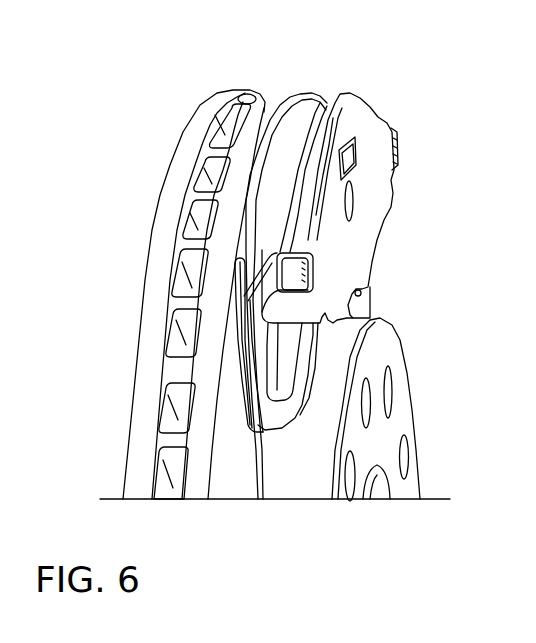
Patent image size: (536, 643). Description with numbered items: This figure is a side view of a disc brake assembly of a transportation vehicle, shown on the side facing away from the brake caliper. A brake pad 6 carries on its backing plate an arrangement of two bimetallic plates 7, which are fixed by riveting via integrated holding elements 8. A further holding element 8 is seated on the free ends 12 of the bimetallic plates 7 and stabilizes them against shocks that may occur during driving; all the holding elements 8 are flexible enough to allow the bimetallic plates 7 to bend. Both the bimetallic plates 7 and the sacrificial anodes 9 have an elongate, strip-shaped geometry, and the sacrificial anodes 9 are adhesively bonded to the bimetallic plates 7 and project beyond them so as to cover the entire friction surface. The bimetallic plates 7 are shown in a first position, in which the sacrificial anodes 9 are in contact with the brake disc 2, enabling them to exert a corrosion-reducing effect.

The brake disc 2 is at (222, 438).
The brake pad 6 is at (330, 110).
The bimetallic plates 7 is at (243, 335).
The holding elements 8 is at (277, 252).
The sacrificial anodes 9 is at (235, 276).
The free ends 12 is at (255, 380).